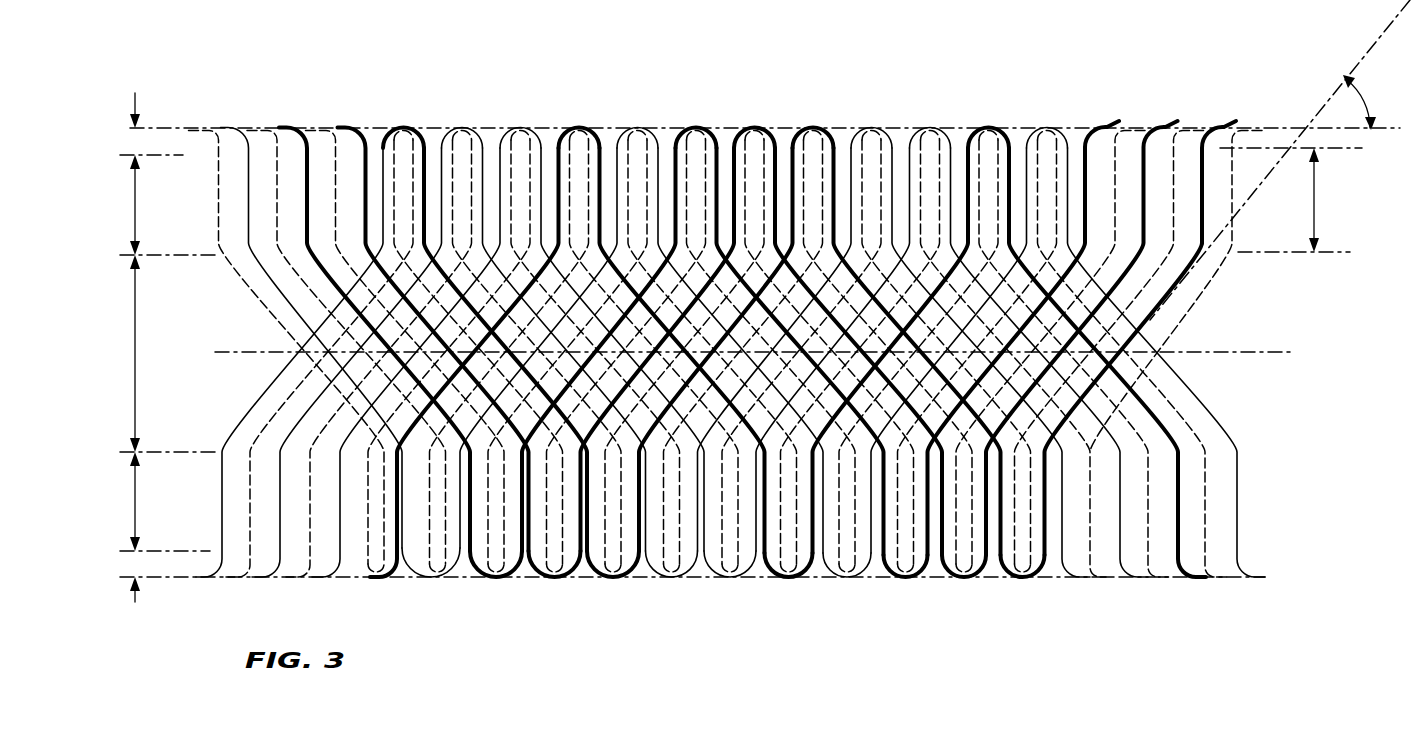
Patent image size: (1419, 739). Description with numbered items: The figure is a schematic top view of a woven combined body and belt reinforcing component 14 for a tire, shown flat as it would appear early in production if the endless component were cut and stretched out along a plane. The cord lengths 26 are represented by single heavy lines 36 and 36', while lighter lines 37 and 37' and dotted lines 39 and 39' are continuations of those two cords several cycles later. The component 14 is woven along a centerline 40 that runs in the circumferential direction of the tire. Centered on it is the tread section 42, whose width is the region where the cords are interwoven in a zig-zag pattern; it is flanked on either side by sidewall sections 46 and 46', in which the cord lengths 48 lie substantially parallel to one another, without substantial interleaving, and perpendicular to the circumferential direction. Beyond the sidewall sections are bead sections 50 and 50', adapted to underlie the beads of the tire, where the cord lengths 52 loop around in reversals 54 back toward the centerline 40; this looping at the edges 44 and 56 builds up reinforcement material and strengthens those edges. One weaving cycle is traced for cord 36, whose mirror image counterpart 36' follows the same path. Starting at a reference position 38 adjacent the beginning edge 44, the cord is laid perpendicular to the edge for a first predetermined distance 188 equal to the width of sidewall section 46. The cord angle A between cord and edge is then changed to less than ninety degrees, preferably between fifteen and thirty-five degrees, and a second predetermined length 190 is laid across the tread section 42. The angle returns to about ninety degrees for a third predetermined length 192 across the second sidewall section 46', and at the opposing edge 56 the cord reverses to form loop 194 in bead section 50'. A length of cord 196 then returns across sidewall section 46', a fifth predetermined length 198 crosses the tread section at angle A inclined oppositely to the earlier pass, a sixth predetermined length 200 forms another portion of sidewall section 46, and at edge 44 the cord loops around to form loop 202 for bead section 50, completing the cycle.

The component 14 is at (651, 110).
The cord lengths 26 is at (855, 298).
The cord reinforcement strip 36 is at (1219, 160).
The mirror image cord 36' is at (1133, 395).
The lighter line 37 is at (1036, 133).
The lighter line 37' is at (1052, 402).
The reference position 38 is at (1228, 123).
The dotted line 39 is at (1076, 310).
The dotted line 39' is at (1091, 398).
The centerline 40 is at (1275, 350).
The tread section 42 is at (170, 353).
The edge 44 is at (1138, 86).
The sidewall section 46 is at (151, 205).
The second sidewall section 46' is at (167, 501).
The cord lengths 48 is at (342, 180).
The bead section 50 is at (765, 107).
The bead section 50' is at (666, 584).
The cord lengths 52 is at (433, 130).
The reversals 54 is at (374, 156).
The opposing edge 56 is at (613, 582).
The first predetermined distance 188 is at (1193, 210).
The second predetermined length 190 is at (1153, 298).
The third predetermined length 192 is at (1047, 572).
The loop 194 is at (1045, 546).
The length of cord 196 is at (990, 518).
The fifth predetermined length 198 is at (945, 366).
The sixth predetermined length 200 is at (838, 165).
The loop 202 is at (814, 133).
The cord angle A is at (1362, 95).